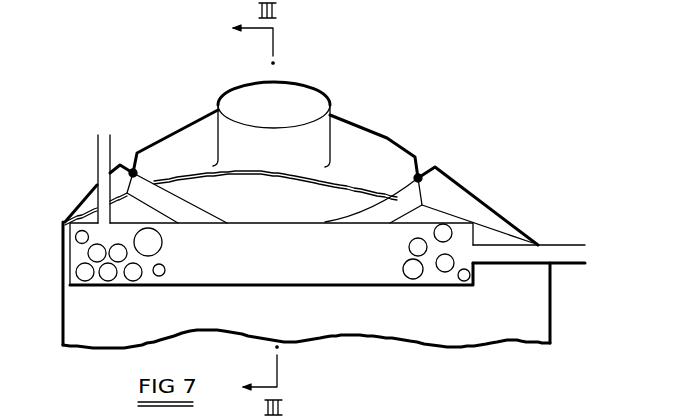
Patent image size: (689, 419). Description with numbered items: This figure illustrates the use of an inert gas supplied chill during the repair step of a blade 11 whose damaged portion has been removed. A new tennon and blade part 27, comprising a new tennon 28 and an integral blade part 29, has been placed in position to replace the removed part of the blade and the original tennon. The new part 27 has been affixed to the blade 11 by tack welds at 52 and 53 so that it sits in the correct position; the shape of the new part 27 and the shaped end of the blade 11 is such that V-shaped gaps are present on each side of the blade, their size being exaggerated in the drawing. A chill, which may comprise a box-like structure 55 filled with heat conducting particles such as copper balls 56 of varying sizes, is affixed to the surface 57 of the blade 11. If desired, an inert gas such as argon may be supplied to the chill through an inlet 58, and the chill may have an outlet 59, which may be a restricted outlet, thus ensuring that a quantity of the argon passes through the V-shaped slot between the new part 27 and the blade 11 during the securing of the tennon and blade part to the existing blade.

The blade 11 is at (491, 361).
The new tennon and blade part 27 is at (365, 97).
The new tennon 28 is at (293, 98).
The integral blade part 29 is at (392, 150).
The tack weld 52 is at (133, 172).
The tack weld 53 is at (419, 177).
The box-like structure 55 is at (309, 296).
The copper balls 56 is at (450, 230).
The surface of blade 57 is at (515, 290).
The inlet 58 is at (552, 250).
The outlet 59 is at (102, 137).